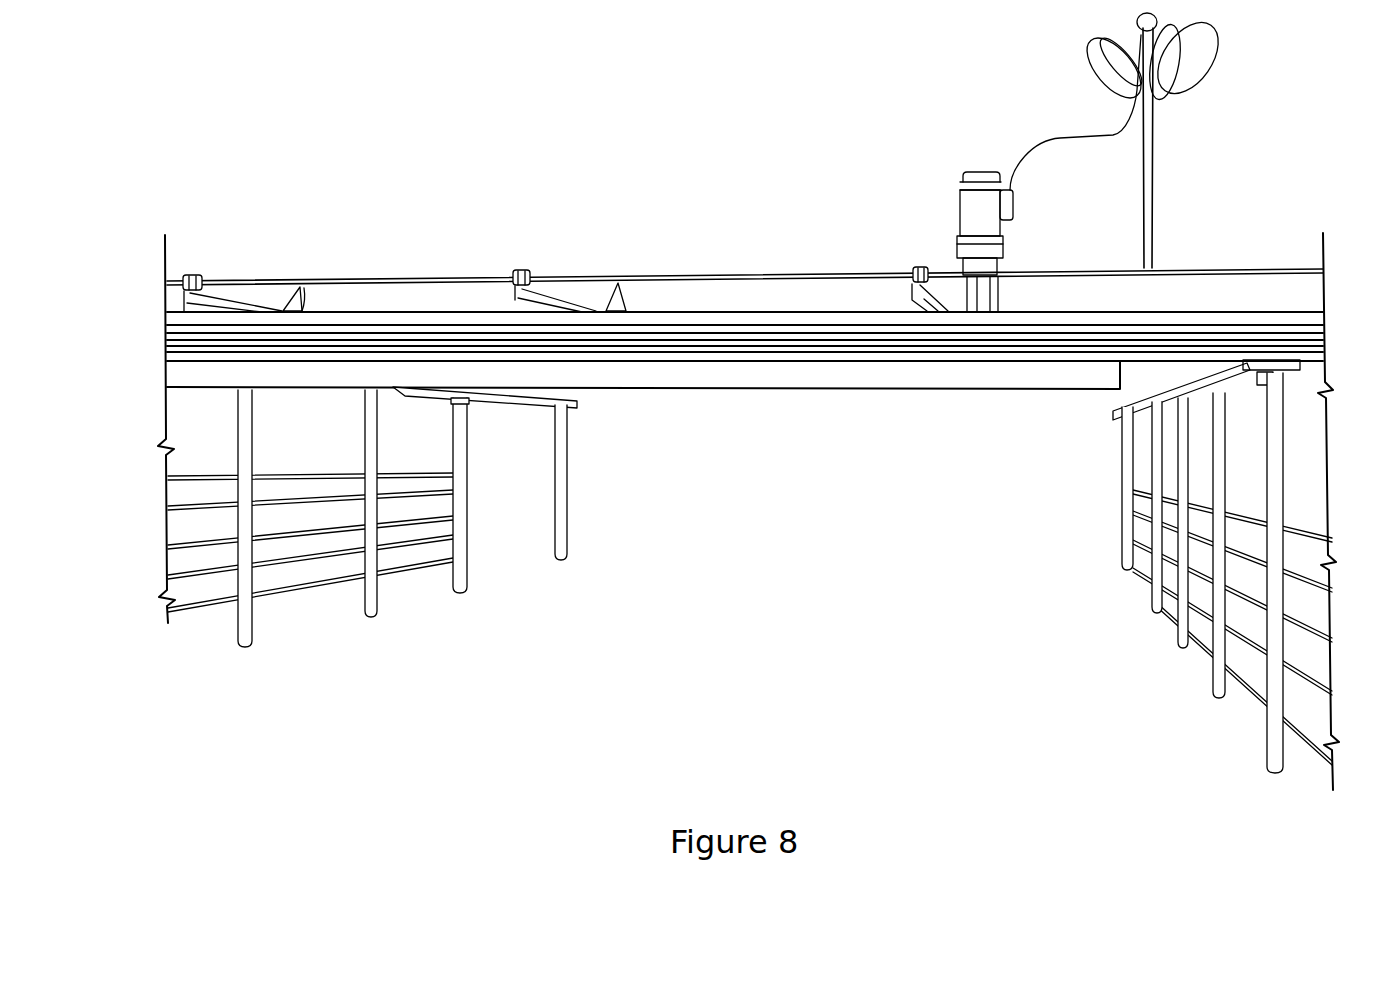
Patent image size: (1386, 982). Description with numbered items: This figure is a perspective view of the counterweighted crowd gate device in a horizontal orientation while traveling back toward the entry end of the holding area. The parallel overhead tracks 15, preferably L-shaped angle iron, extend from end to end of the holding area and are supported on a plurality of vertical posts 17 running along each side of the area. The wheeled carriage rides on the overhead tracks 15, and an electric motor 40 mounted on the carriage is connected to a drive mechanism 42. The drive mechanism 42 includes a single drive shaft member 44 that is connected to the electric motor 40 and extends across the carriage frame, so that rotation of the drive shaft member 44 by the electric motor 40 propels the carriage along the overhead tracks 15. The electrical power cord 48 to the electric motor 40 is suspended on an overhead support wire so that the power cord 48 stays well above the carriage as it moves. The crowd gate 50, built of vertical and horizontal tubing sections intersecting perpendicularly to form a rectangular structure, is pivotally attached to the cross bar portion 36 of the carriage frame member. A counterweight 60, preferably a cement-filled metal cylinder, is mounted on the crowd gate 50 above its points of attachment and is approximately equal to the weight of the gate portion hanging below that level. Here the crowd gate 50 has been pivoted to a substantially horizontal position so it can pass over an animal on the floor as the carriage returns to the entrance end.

The parallel overhead tracks 15 is at (510, 400).
The vertical posts 17 is at (250, 447).
The cross bar portion 36 is at (676, 297).
The electric motor 40 is at (934, 225).
The drive mechanism 42 is at (1018, 241).
The drive shaft member 44 is at (318, 280).
The electrical power cord 48 is at (1113, 132).
The crowd gate 50 is at (820, 340).
The counterweight 60 is at (722, 393).